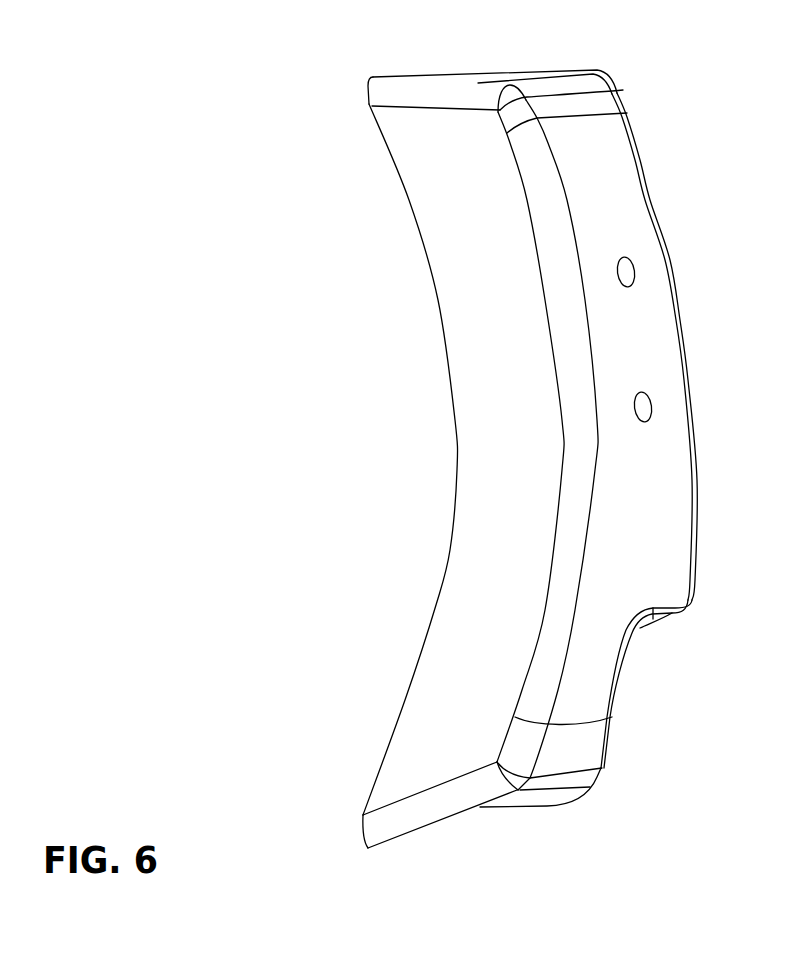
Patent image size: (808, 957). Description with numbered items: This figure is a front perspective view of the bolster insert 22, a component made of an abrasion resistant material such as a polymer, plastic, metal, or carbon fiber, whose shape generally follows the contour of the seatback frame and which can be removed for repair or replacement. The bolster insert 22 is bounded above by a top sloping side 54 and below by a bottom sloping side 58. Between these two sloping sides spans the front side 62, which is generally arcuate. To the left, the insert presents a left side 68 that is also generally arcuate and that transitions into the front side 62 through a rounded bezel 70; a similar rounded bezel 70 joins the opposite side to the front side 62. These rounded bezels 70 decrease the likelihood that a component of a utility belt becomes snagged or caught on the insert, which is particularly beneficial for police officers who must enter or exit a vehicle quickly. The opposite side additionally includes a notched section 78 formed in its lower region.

The bolster insert 22 is at (300, 170).
The top sloping side 54 is at (515, 86).
The bottom sloping side 58 is at (533, 800).
The front side 62 is at (630, 358).
The left side 68 is at (485, 445).
The rounded bezel 70 is at (552, 223).
The notched section 78 is at (633, 651).